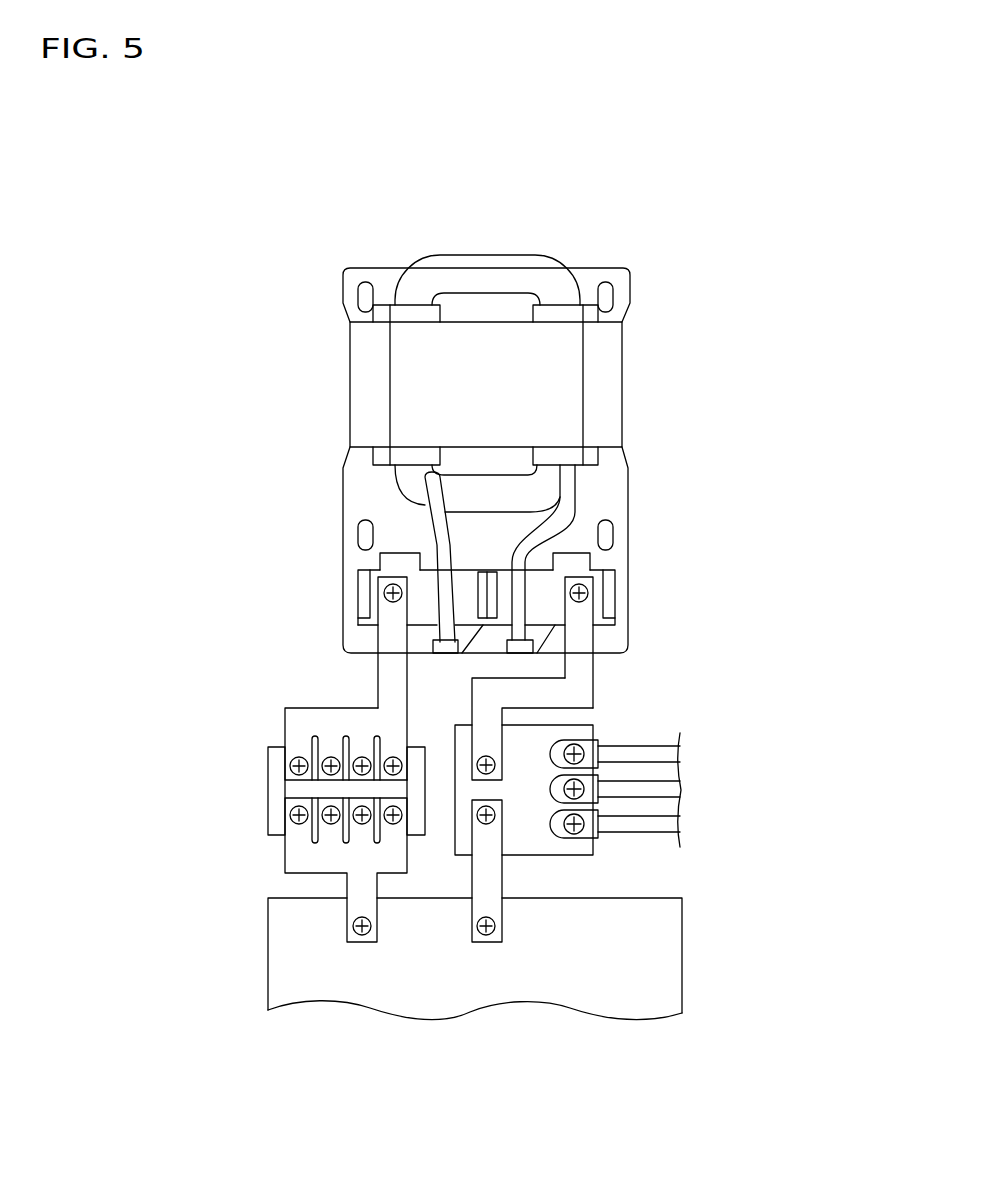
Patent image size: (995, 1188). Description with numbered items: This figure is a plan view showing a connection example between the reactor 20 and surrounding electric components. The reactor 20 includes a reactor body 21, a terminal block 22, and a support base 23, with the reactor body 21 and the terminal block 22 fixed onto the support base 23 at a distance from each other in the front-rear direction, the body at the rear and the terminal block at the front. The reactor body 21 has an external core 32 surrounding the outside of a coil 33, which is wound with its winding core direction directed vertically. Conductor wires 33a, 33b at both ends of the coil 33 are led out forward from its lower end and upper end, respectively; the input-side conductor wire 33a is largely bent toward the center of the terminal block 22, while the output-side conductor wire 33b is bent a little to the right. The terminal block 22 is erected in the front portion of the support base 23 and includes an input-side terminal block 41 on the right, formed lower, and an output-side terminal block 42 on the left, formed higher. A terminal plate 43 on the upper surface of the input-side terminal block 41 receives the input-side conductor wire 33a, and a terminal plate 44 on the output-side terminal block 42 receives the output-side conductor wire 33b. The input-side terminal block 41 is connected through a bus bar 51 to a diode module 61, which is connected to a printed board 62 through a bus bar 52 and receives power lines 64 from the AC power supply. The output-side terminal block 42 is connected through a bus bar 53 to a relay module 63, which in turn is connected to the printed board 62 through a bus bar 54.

The reactor 20 is at (312, 292).
The reactor body 21 is at (350, 379).
The terminal block 22 is at (357, 593).
The support base 23 is at (362, 465).
The external core 32 is at (610, 378).
The coil 33 is at (485, 268).
The input-side conductor wire 33a is at (557, 534).
The output-side conductor wire 33b is at (427, 532).
The input-side terminal block 41 is at (617, 593).
The output-side terminal block 42 is at (367, 625).
The terminal plate 43 is at (590, 562).
The terminal plate 44 is at (395, 567).
The bus bar 51 is at (593, 678).
The bus bar 52 is at (488, 879).
The bus bar 53 is at (330, 722).
The bus bar 54 is at (298, 861).
The diode module 61 is at (560, 718).
The printed board 62 is at (282, 942).
The relay module 63 is at (262, 772).
The power lines 64 is at (672, 752).